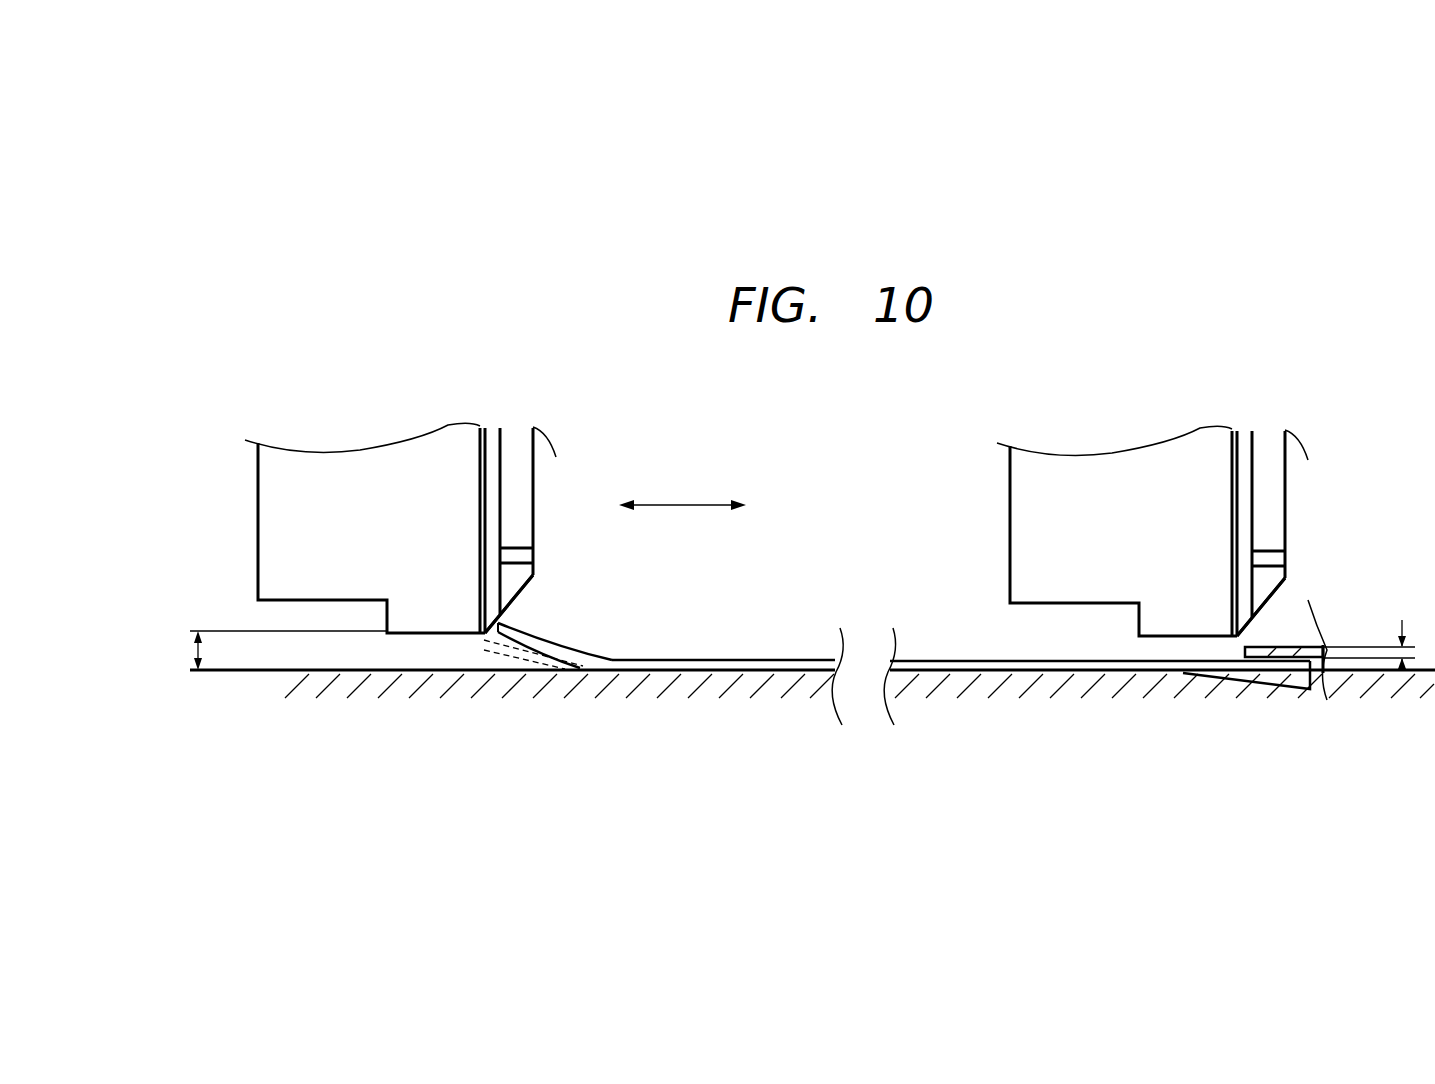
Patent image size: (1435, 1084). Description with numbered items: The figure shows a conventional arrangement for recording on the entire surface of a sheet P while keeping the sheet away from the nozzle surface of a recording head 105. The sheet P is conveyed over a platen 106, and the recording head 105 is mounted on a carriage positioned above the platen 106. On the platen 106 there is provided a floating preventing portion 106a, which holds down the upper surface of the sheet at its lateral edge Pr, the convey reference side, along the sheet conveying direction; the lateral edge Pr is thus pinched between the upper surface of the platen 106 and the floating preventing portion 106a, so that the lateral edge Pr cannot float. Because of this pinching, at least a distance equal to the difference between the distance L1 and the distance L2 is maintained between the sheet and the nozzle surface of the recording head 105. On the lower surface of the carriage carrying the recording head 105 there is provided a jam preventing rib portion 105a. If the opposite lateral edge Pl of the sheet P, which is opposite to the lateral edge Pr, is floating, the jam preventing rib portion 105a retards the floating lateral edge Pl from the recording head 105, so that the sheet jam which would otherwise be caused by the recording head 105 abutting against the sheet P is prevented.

The recording head 105 is at (392, 448).
The jam preventing rib portion 105a is at (525, 594).
The platen 106 is at (1093, 690).
The floating preventing portion 106a is at (1310, 646).
The sheet P is at (960, 660).
The opposite lateral edge Pl is at (525, 628).
The lateral edge Pr is at (1323, 677).
The distance L1 is at (276, 650).
The distance L2 is at (1377, 638).